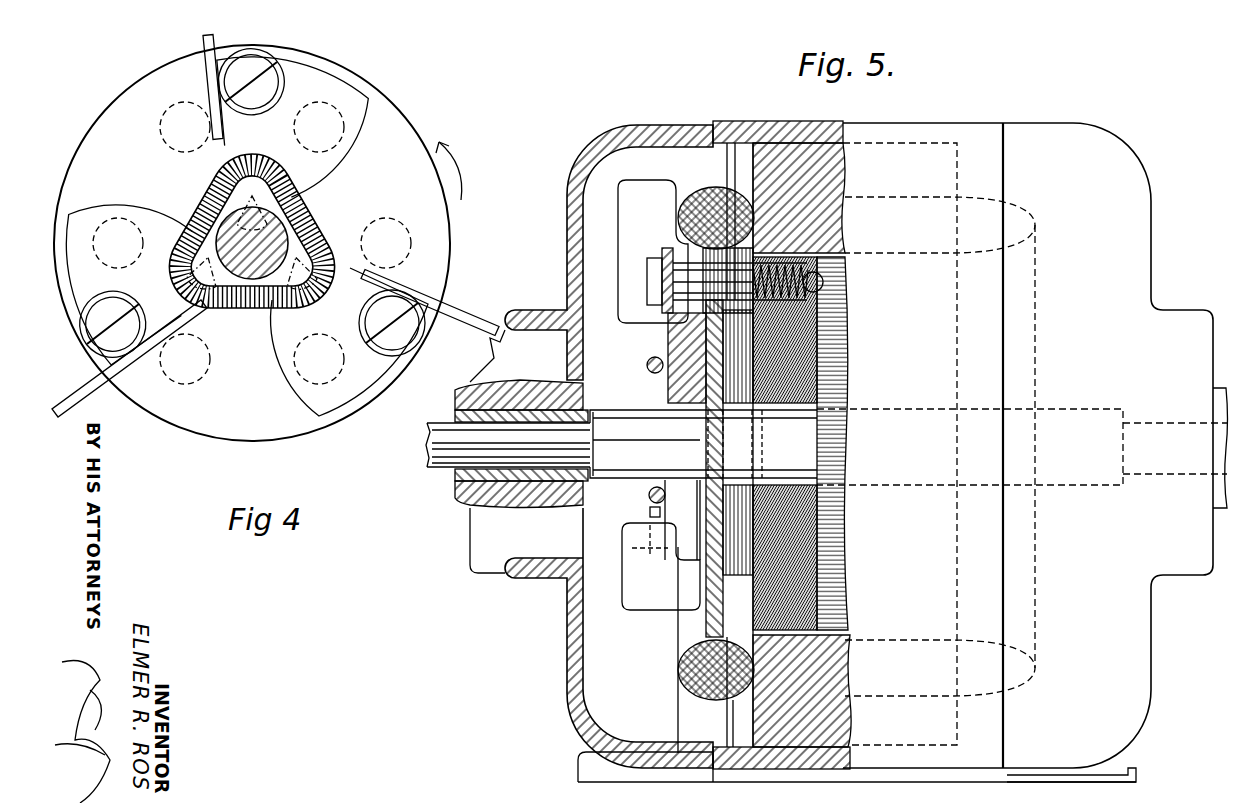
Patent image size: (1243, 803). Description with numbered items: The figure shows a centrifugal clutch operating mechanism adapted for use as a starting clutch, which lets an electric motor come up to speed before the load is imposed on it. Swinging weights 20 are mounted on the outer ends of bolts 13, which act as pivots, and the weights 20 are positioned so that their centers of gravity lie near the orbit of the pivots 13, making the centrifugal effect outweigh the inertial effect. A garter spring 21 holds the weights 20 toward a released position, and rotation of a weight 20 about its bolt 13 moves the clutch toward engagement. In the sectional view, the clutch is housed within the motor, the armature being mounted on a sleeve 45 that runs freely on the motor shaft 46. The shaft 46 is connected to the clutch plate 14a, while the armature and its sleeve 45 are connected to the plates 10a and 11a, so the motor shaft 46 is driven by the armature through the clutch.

In FIG. 4, the bolt 13 is at (257, 100).
In FIG. 5, the bolt 13 is at (653, 267).
In FIG. 4, the swinging weight 20 is at (330, 171).
In FIG. 5, the swinging weight 20 is at (655, 380).
In FIG. 5, the garter spring 21 is at (648, 358).
In FIG. 5, the sleeve 45 is at (815, 395).
In FIG. 5, the motor shaft 46 is at (807, 443).
In FIG. 5, the clutch plate 14a is at (740, 397).
In FIG. 5, the plate 11a is at (708, 620).
In FIG. 5, the plate 10a is at (752, 643).